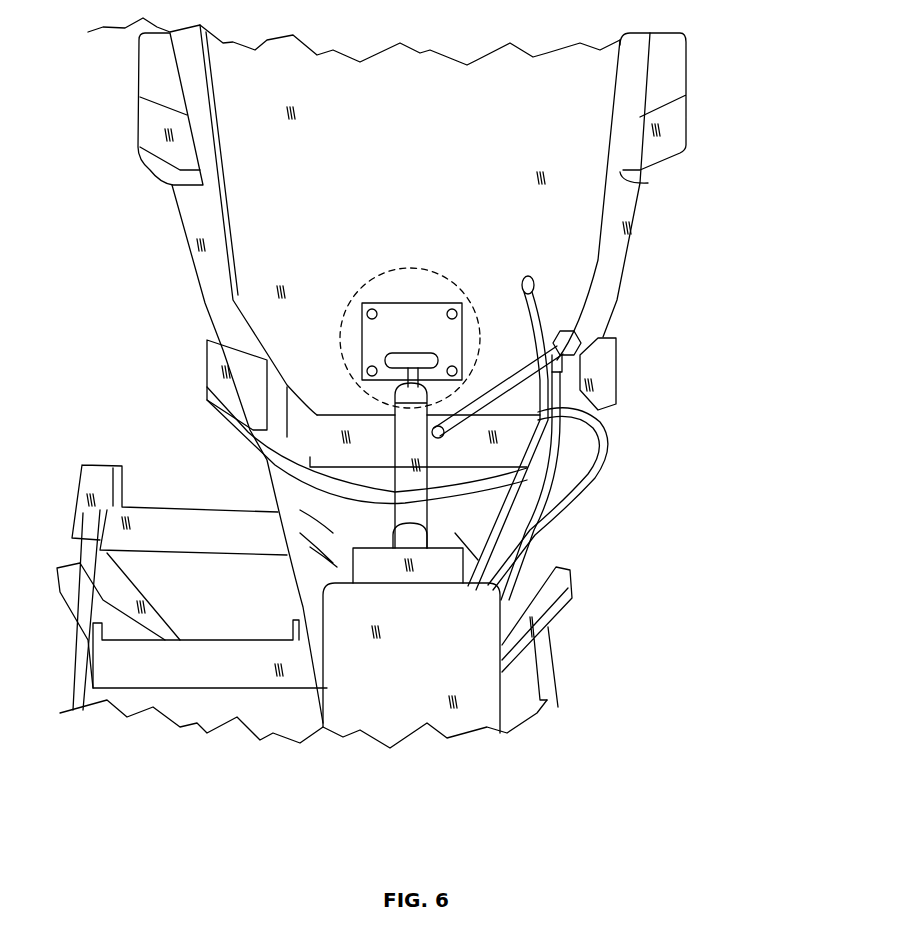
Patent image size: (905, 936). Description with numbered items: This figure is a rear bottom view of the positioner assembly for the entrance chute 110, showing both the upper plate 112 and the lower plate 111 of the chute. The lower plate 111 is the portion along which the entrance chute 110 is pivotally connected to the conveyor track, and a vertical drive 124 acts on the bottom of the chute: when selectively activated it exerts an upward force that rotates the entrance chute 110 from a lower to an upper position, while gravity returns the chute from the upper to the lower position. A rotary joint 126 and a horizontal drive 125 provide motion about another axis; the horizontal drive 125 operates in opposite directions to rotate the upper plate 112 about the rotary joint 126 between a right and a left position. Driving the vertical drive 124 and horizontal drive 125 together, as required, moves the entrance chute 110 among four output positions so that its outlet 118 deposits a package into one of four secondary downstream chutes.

The entrance chute 110 is at (322, 438).
The lower plate 111 is at (422, 224).
The upper plate 112 is at (417, 498).
The outlet 118 is at (307, 598).
The vertical drive 124 is at (430, 503).
The horizontal drive 125 is at (493, 395).
The rotary joint 126 is at (482, 340).